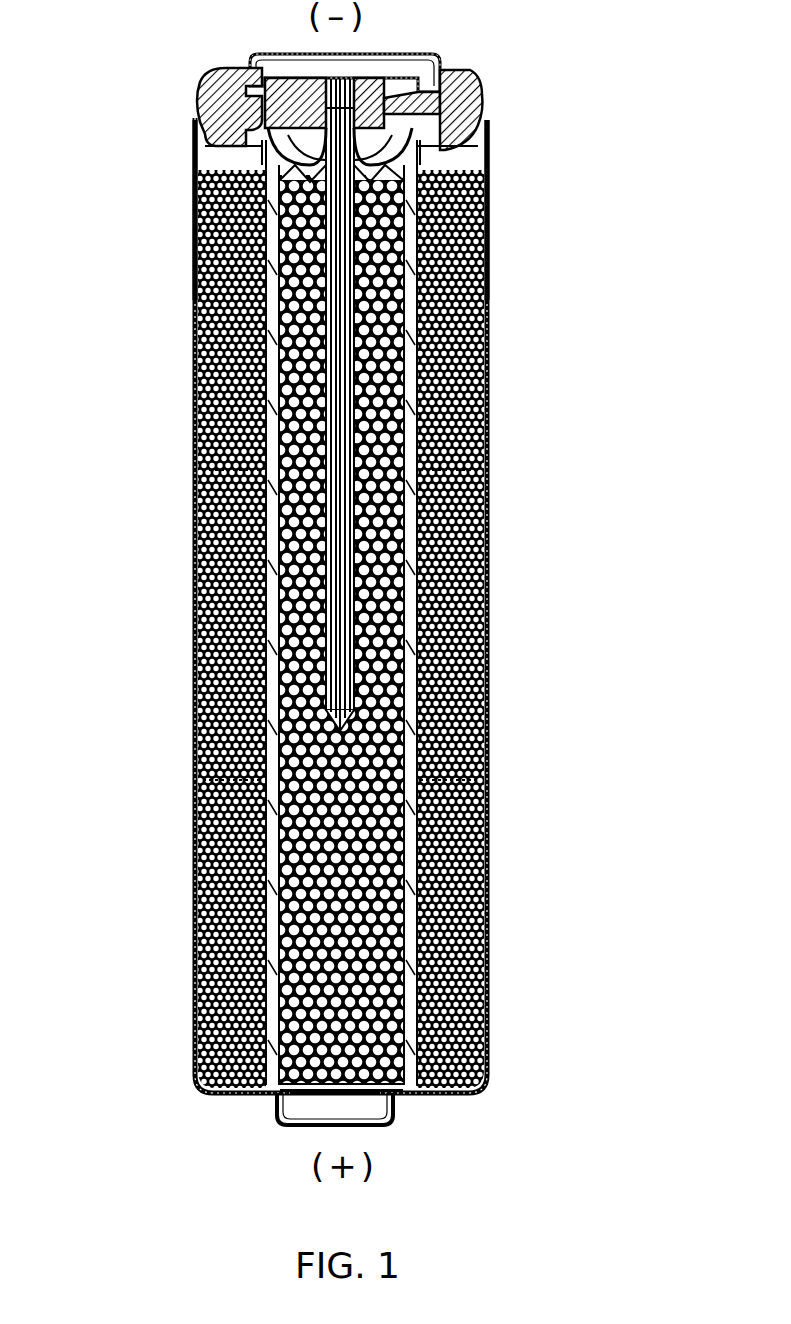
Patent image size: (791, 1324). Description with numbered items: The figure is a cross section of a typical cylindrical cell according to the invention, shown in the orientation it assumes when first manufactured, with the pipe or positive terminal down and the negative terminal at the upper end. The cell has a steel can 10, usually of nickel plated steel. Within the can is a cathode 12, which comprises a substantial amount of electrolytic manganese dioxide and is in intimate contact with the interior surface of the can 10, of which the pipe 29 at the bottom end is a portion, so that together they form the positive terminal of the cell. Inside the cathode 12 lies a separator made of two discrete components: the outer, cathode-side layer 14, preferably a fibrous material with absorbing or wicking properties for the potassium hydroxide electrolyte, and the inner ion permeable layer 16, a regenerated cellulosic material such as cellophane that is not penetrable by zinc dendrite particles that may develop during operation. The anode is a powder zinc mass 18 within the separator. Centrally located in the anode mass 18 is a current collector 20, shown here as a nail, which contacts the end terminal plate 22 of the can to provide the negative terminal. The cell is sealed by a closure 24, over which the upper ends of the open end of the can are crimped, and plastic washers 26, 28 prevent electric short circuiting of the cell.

The steel can 10 is at (195, 278).
The cathode 12 is at (195, 397).
The outer separator layer 14 is at (195, 508).
The ion permeable layer 16 is at (490, 368).
The anode mass 18 is at (488, 893).
The current collector 20 is at (490, 228).
The end terminal plate 22 is at (398, 53).
The closure 24 is at (198, 103).
The plastic washer 26 is at (495, 140).
The plastic washer 28 is at (287, 1118).
The pipe 29 is at (365, 1127).